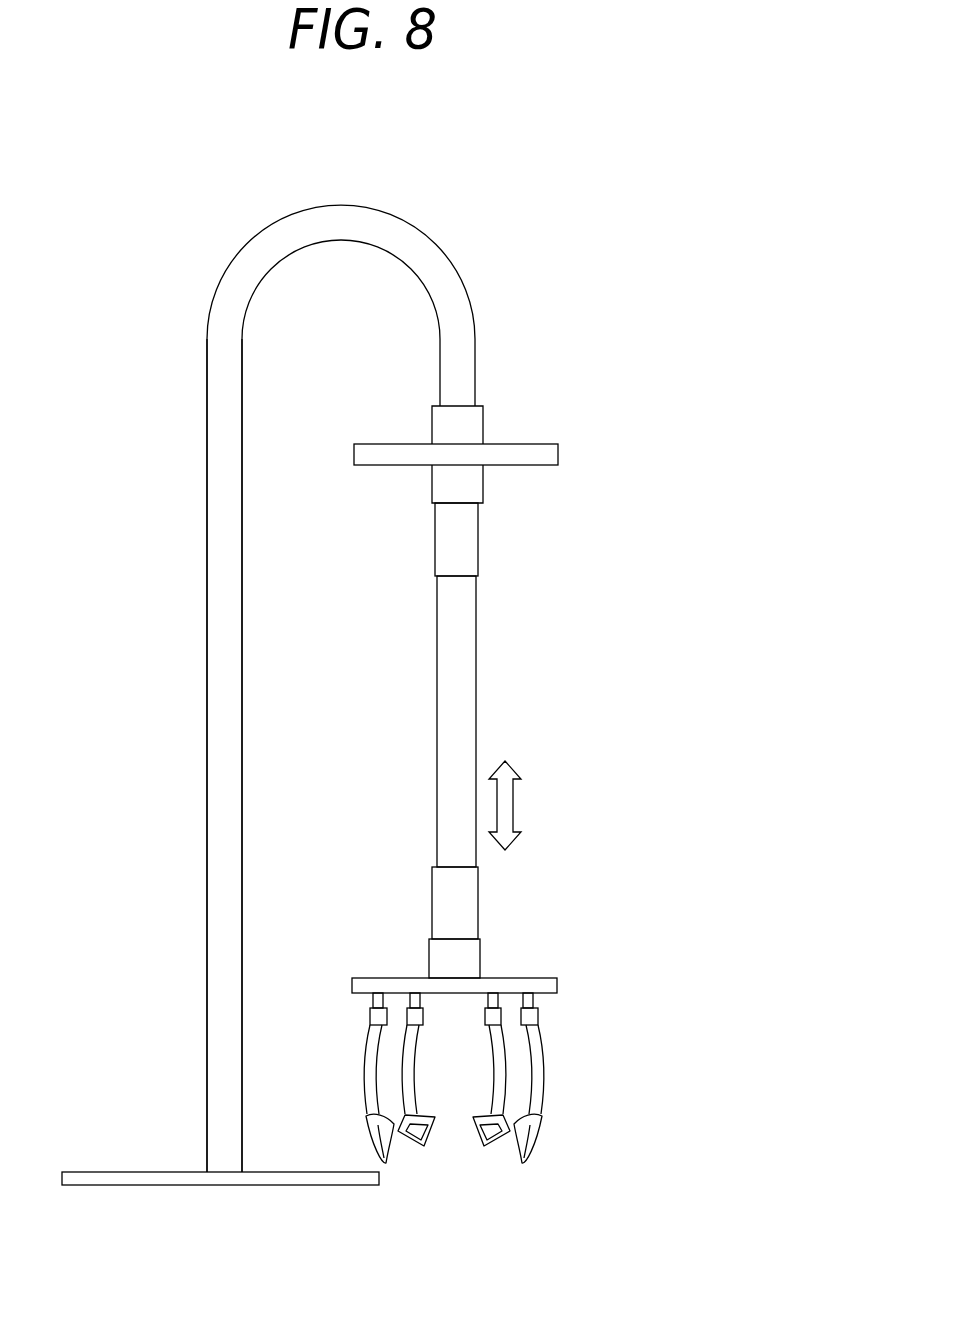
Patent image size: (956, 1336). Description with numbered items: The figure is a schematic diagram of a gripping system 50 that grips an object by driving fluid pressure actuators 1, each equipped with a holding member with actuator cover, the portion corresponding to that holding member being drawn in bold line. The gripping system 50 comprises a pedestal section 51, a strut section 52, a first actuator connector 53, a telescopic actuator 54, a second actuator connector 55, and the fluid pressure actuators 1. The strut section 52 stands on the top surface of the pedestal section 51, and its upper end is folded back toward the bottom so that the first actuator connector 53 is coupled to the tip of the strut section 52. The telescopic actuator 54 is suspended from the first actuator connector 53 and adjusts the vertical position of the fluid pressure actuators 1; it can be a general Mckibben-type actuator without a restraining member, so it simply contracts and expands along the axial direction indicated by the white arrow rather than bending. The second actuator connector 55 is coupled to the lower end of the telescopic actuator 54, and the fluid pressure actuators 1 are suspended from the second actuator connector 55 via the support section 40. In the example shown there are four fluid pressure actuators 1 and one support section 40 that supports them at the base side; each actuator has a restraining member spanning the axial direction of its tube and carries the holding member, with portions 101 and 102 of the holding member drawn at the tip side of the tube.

The gripping system 50 is at (535, 180).
The pedestal section 51 is at (288, 1185).
The strut section 52 is at (222, 713).
The first actuator connector 53 is at (558, 453).
The telescopic actuator 54 is at (465, 707).
The second actuator connector 55 is at (471, 955).
The support section 40 is at (545, 985).
The fluid pressure actuator 1 is at (545, 1017).
The finger body 102 is at (538, 1088).
The finger tip claw 101 is at (528, 1137).